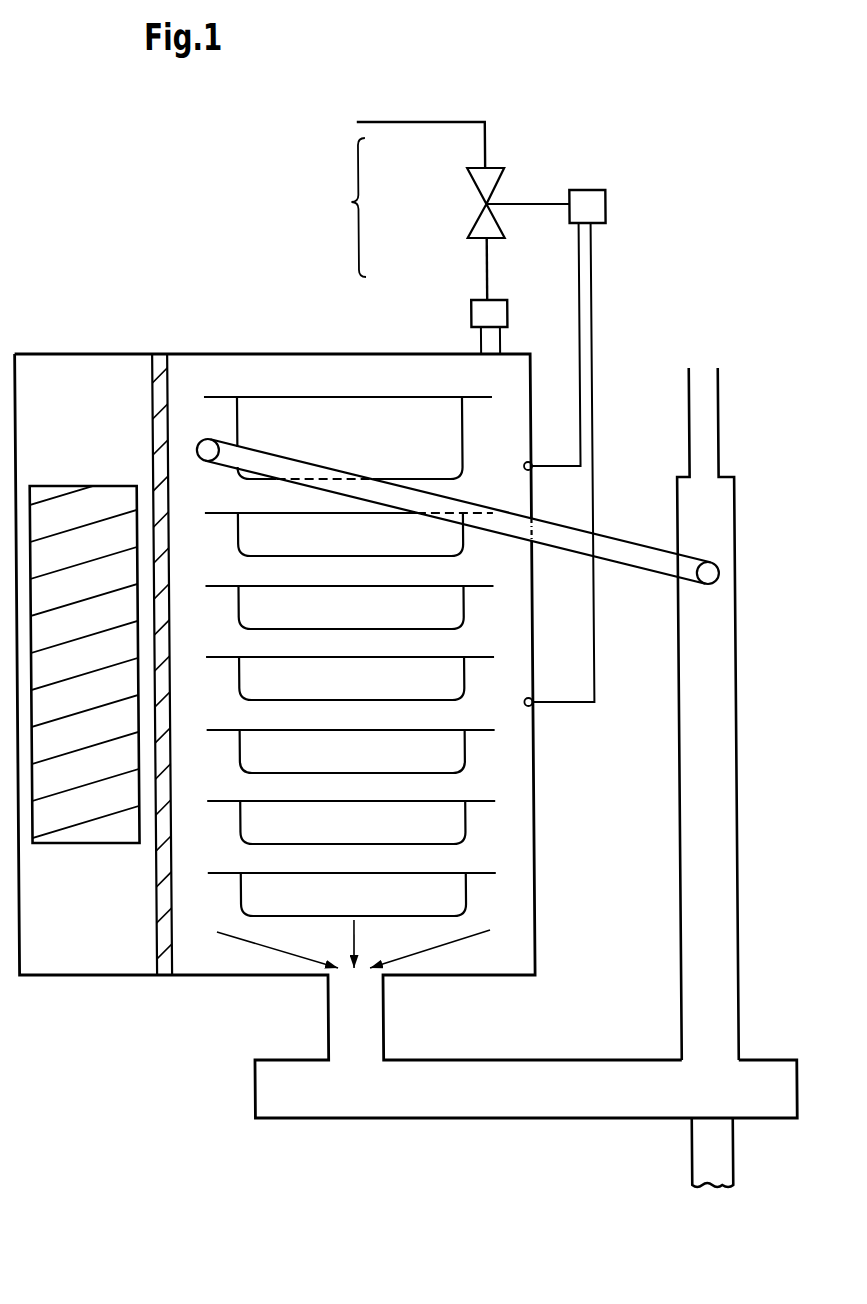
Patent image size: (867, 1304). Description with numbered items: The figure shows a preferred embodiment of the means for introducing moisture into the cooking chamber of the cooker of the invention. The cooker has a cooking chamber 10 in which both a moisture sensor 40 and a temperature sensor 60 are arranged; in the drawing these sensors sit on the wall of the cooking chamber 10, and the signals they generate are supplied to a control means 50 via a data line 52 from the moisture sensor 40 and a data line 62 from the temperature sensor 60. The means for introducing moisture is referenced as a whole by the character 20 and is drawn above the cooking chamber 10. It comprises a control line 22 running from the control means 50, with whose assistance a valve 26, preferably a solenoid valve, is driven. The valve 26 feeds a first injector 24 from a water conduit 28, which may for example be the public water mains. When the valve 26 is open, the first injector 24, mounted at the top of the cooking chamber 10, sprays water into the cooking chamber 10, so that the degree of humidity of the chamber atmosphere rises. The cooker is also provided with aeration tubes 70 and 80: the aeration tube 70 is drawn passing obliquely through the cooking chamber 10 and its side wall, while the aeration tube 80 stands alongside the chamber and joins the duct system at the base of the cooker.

The cooking chamber 10 is at (516, 898).
The means for introducing moisture 20 is at (403, 219).
The control line 22 is at (532, 203).
The first injector 24 is at (474, 315).
The valve 26 is at (494, 168).
The water conduit 28 is at (396, 120).
The moisture sensor 40 is at (532, 705).
The control means 50 is at (609, 195).
The data line 52 is at (595, 432).
The temperature sensor 60 is at (532, 468).
The data line 62 is at (561, 300).
The aeration tube 70 is at (635, 555).
The aeration tube 80 is at (736, 642).